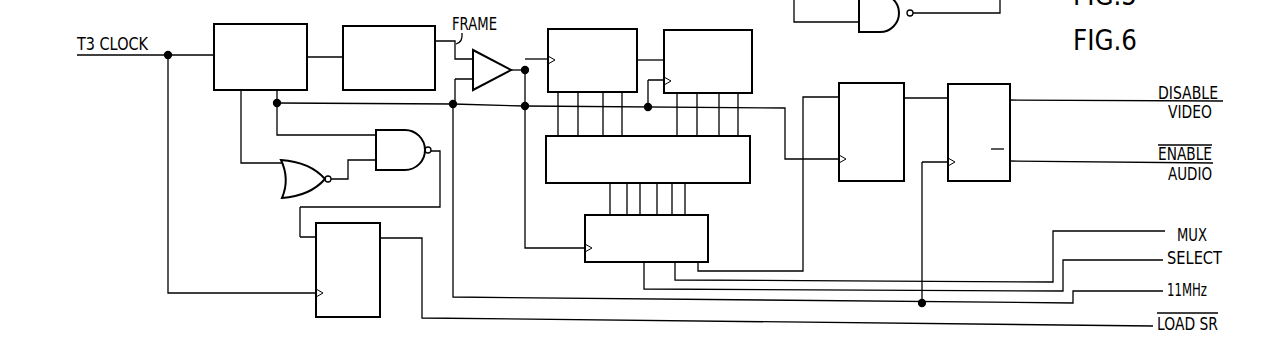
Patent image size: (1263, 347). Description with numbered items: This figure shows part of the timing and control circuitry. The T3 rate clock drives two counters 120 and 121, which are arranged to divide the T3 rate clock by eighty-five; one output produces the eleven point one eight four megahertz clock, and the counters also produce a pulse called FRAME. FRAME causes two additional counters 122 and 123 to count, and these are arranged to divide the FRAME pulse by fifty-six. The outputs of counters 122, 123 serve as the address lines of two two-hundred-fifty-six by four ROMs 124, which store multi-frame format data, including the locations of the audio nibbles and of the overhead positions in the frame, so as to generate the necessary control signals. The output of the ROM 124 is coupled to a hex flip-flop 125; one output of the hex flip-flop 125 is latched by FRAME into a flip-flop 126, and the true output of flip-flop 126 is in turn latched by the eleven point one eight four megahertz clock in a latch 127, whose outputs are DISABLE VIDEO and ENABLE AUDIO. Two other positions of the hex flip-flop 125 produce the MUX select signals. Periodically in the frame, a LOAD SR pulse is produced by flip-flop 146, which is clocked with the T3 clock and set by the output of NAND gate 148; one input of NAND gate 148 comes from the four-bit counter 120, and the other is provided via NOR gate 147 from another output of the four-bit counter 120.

The 4-bit counter 120 is at (258, 24).
The counter 121 is at (386, 25).
The counter 122 is at (590, 26).
The counter 123 is at (707, 27).
The ROM 124 is at (752, 160).
The hex flip-flop 125 is at (585, 240).
The flip-flop 126 is at (873, 84).
The latch 127 is at (979, 84).
The flip-flop 146 is at (316, 258).
The NOR gate 147 is at (303, 160).
The NAND gate 148 is at (402, 131).